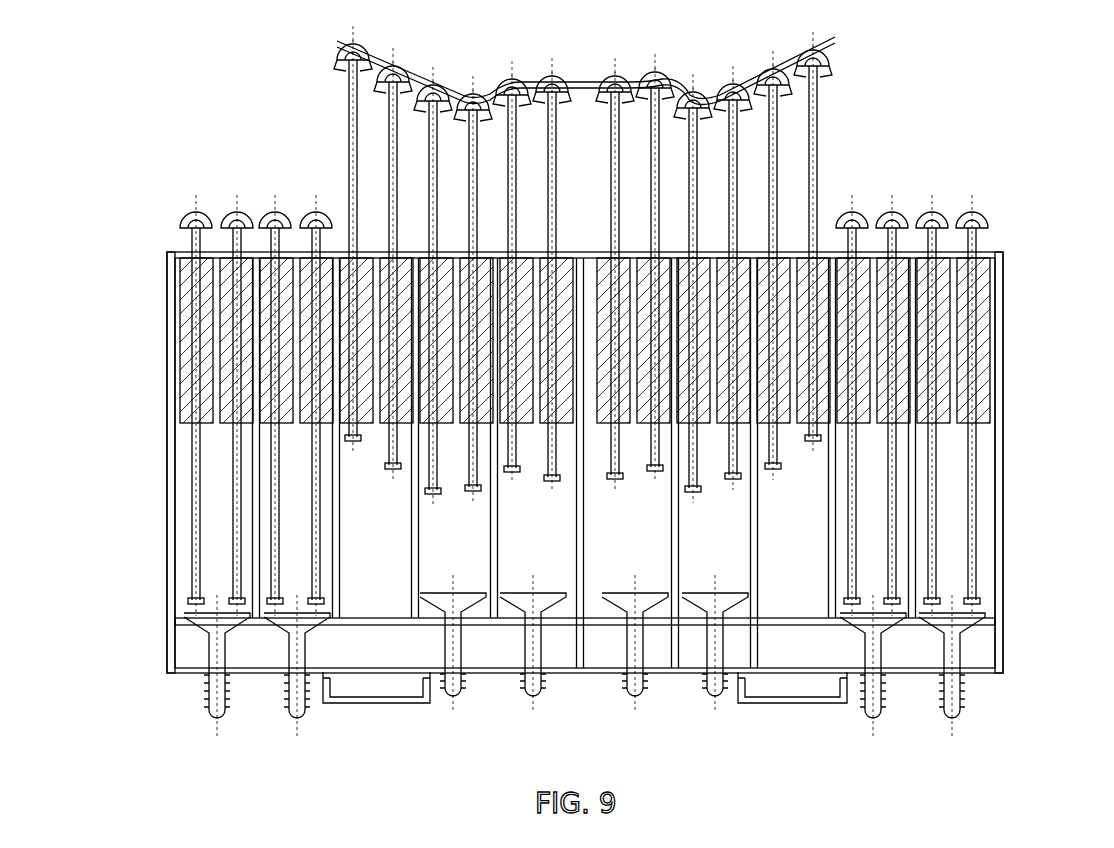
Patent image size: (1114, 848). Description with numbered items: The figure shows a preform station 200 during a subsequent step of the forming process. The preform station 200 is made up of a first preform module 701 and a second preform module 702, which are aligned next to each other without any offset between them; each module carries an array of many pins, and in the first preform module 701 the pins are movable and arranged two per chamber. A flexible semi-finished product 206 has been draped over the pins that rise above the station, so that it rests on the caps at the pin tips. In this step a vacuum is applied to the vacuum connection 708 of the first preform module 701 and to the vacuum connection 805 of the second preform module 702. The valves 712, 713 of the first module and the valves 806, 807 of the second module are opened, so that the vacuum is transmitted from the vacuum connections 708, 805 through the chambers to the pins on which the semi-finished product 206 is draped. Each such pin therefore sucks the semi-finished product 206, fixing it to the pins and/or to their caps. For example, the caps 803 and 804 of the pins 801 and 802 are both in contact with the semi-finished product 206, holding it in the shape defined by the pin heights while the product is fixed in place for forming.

The preform station 200 is at (960, 92).
The flexible semi-finished product 206 is at (753, 72).
The first preform module 701 is at (167, 494).
The second preform module 702 is at (1004, 461).
The vacuum connection 708 is at (373, 690).
The valve 712 is at (468, 682).
The valve 713 is at (548, 682).
The pin 801 is at (388, 197).
The pin 802 is at (430, 155).
The cap 803 is at (407, 72).
The cap 804 is at (455, 85).
The vacuum connection 805 is at (817, 688).
The valve 806 is at (650, 682).
The valve 807 is at (730, 683).